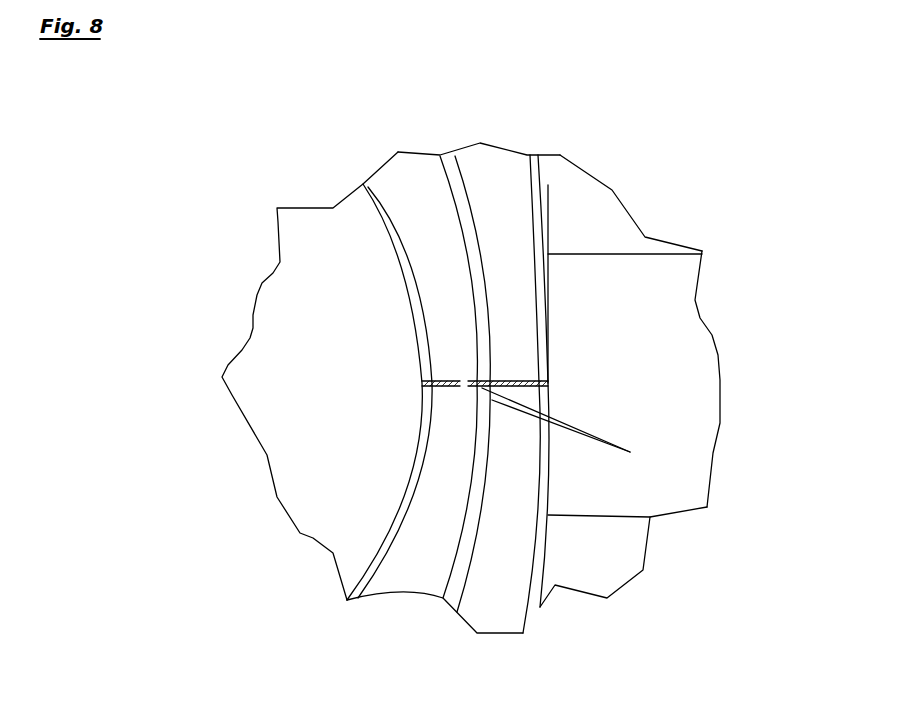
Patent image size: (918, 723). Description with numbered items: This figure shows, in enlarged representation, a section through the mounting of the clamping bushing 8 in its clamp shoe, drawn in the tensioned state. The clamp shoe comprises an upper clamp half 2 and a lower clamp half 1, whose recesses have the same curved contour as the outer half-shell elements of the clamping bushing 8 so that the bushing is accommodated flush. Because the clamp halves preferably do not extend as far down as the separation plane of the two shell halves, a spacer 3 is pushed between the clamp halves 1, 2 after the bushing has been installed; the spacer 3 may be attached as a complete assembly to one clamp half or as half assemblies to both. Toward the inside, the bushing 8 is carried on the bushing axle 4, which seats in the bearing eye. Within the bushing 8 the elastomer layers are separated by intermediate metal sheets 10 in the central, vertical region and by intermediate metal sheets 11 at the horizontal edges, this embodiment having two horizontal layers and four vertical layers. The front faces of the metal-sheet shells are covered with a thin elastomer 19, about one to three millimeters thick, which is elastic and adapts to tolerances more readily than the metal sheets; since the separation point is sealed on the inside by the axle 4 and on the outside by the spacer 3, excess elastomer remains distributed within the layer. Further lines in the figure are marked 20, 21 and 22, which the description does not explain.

The lower clamp half 1 is at (600, 543).
The upper clamp half 2 is at (595, 218).
The spacer 3 is at (667, 368).
The bushing axle 4 is at (313, 333).
The clamping bushing 8 is at (400, 253).
The intermediate metal sheet 10 is at (448, 168).
The intermediate metal sheet 11 is at (540, 183).
The elastomer 19 is at (430, 382).
The parting line 20 is at (515, 285).
The parting line 21 is at (650, 517).
The edge lines 22 is at (630, 452).